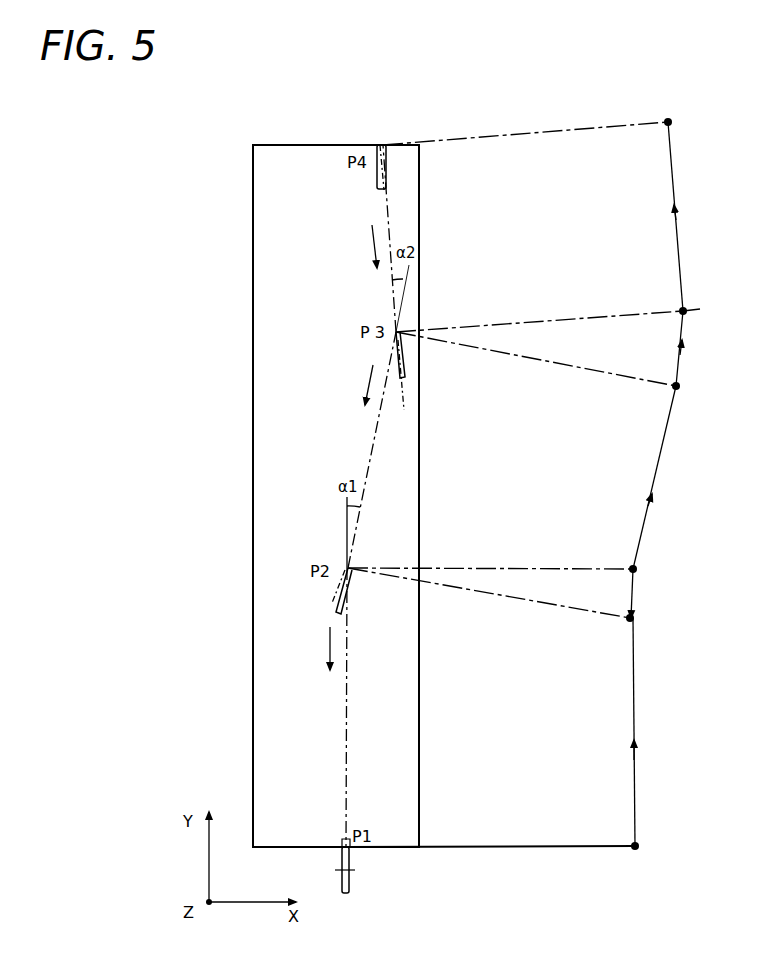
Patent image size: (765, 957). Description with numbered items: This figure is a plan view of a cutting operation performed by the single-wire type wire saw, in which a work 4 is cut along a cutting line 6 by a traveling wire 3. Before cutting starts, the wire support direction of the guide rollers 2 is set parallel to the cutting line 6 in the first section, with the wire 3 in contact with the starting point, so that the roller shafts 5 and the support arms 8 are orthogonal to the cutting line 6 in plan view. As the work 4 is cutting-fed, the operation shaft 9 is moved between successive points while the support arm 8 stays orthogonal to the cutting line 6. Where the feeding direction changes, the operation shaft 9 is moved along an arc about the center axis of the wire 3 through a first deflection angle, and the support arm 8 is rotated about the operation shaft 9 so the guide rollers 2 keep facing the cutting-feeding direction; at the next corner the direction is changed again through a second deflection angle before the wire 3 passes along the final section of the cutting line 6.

The guide roller 2 is at (350, 882).
The wire 3 is at (341, 840).
The work 4 is at (253, 447).
The roller shaft 5 is at (355, 870).
The cutting line 6 is at (350, 695).
The support arm 8 is at (518, 845).
The operation shaft 9 is at (631, 850).